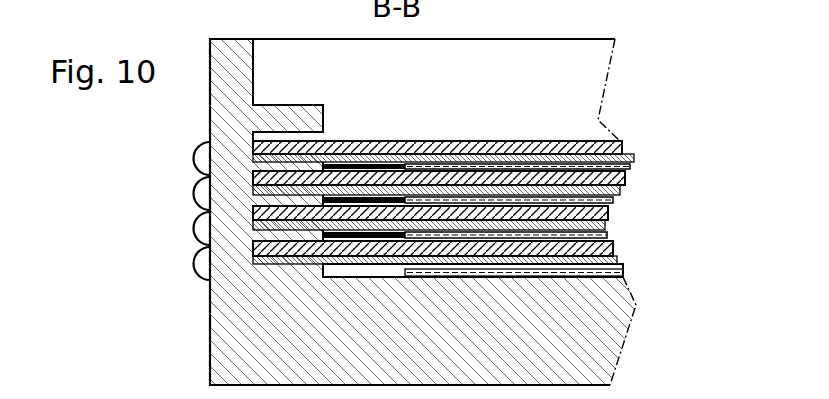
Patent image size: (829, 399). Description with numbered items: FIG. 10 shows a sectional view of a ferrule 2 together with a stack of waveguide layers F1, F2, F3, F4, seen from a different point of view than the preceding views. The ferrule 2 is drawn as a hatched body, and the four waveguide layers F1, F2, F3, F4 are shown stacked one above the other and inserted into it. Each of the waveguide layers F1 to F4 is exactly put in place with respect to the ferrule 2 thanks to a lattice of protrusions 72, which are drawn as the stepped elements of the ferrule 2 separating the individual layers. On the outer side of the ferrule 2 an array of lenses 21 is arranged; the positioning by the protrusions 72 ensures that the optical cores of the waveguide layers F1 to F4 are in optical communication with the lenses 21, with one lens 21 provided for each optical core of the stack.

The ferrule 2 is at (242, 335).
The lens 21 is at (194, 193).
The protrusion 72 is at (325, 166).
The waveguide layer F1 is at (612, 252).
The waveguide layer F2 is at (608, 217).
The waveguide layer F3 is at (620, 183).
The waveguide layer F4 is at (622, 147).